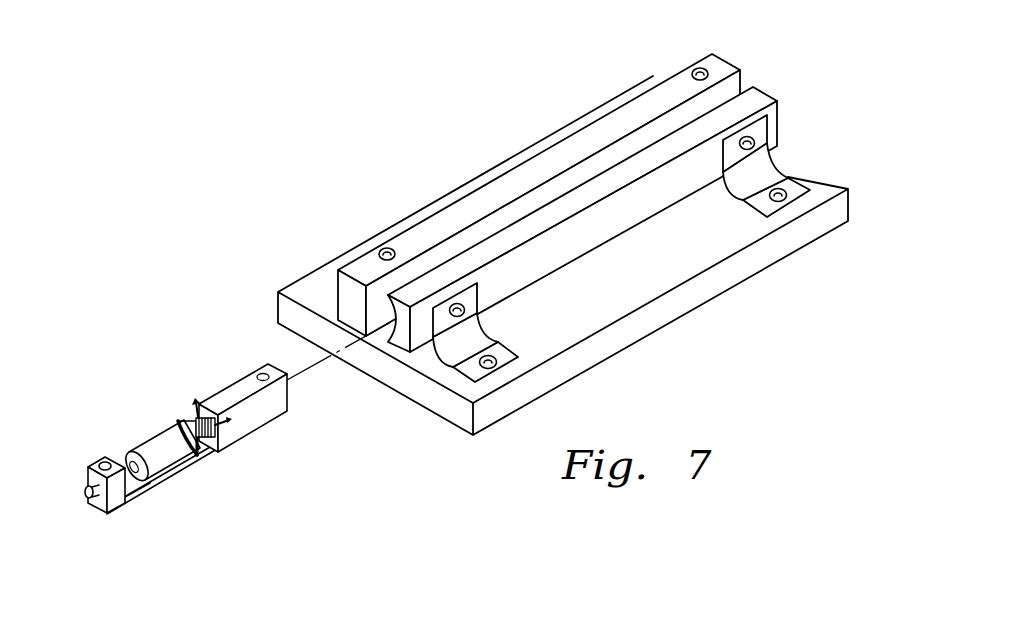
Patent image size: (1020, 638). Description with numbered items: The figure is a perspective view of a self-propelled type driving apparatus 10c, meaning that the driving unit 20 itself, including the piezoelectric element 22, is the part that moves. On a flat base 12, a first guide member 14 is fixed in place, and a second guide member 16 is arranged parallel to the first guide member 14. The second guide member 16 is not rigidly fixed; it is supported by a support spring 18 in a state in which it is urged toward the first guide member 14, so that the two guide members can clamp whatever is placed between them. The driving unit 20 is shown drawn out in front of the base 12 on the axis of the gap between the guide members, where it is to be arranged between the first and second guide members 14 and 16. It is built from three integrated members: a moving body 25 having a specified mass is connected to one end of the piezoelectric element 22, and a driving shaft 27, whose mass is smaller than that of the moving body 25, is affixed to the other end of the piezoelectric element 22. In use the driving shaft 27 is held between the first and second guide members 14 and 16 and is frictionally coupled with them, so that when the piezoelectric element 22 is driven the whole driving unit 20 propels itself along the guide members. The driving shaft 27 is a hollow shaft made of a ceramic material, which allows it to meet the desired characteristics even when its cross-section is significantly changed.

The self-propelled type driving apparatus 10c is at (270, 226).
The base 12 is at (658, 323).
The first guide member 14 is at (722, 63).
The second guide member 16 is at (762, 92).
The support spring 18 is at (490, 330).
The driving unit 20 is at (209, 456).
The piezoelectric element 22 is at (218, 437).
The moving body 25 is at (267, 412).
The driving shaft 27 is at (153, 440).